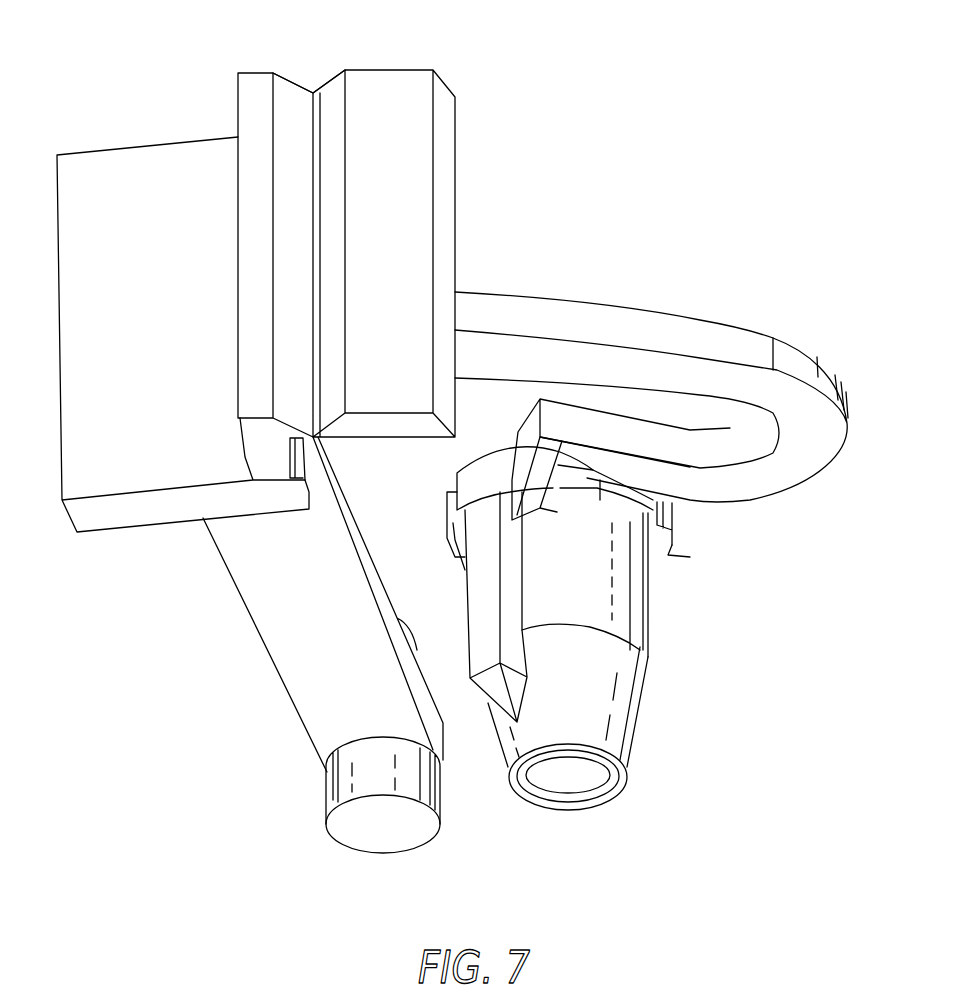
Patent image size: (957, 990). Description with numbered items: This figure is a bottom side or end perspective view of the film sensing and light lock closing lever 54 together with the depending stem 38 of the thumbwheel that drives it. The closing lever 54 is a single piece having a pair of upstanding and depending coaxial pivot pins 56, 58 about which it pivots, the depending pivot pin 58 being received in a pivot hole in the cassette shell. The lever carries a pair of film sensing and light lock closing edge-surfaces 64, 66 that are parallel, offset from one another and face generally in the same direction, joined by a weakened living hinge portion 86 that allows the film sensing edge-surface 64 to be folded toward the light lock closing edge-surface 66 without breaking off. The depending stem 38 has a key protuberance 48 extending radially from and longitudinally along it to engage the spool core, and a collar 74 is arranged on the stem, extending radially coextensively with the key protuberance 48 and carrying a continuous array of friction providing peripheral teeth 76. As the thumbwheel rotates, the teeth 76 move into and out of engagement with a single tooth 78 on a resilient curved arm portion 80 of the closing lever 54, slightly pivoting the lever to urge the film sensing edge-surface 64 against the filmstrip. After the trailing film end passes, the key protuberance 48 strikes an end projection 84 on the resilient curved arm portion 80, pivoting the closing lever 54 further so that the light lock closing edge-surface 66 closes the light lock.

The depending stem 38 is at (615, 733).
The key protuberance 48 is at (490, 615).
The closing lever 54 is at (693, 405).
The upstanding pivot pin 56 is at (413, 637).
The depending pivot pin 58 is at (415, 835).
The film sensing edge-surface 64 is at (447, 165).
The light lock closing edge-surface 66 is at (310, 490).
The collar 74 is at (672, 541).
The peripheral teeth 76 is at (677, 510).
The single tooth 78 is at (600, 480).
The resilient curved arm portion 80 is at (798, 352).
The end projection 84 is at (557, 507).
The living hinge portion 86 is at (311, 120).